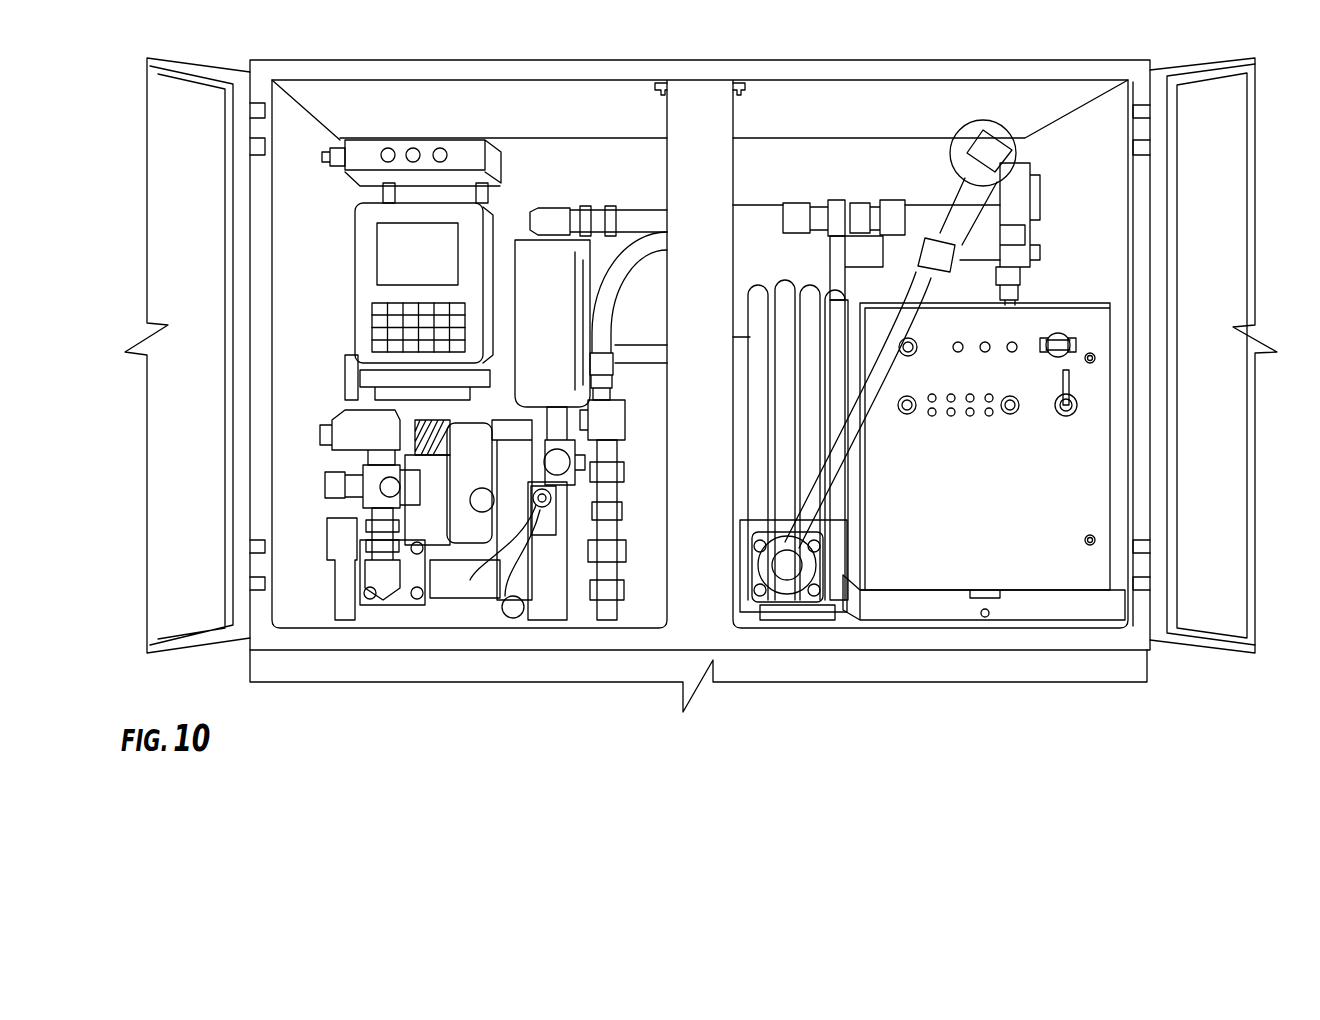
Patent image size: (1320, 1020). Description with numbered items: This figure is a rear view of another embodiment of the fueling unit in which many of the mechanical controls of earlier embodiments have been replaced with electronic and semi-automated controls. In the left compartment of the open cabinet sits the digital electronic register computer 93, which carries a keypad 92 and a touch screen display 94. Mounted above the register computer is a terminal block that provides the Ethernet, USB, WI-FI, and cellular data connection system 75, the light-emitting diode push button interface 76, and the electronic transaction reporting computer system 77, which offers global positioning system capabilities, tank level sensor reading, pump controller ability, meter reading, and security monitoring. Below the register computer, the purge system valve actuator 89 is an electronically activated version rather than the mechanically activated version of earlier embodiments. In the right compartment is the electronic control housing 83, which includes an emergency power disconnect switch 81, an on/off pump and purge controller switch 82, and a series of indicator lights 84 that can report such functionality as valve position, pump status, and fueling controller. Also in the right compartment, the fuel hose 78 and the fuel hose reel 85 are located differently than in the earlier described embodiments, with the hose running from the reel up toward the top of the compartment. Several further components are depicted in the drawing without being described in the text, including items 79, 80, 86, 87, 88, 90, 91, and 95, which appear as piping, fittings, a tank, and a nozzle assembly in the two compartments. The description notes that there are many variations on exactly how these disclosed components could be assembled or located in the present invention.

The Ethernet, USB, WI-FI, and cellular data connection system 75 is at (330, 155).
The light-emitting diode push button interface 76 is at (415, 148).
The electronic transaction reporting computer system 77 is at (472, 147).
The fuel hose 78 is at (770, 280).
The water line 79 is at (908, 225).
The spray nozzle 80 is at (995, 145).
The emergency power disconnect switch 81 is at (1058, 330).
The on/off pump and purge controller switch 82 is at (1072, 388).
The electronic control housing 83 is at (1055, 572).
The indicator lights 84 is at (907, 415).
The fuel hose reel 85 is at (798, 590).
The fitting 86 is at (605, 427).
The pipe 87 is at (600, 508).
The pressure switch 88 is at (543, 575).
The purge system valve actuator 89 is at (435, 490).
The inlet fitting 90 is at (345, 570).
The valve 91 is at (378, 485).
The keypad 92 is at (397, 327).
The digital electronic register computer 93 is at (366, 283).
The touch screen display 94 is at (397, 240).
The tank 95 is at (543, 272).